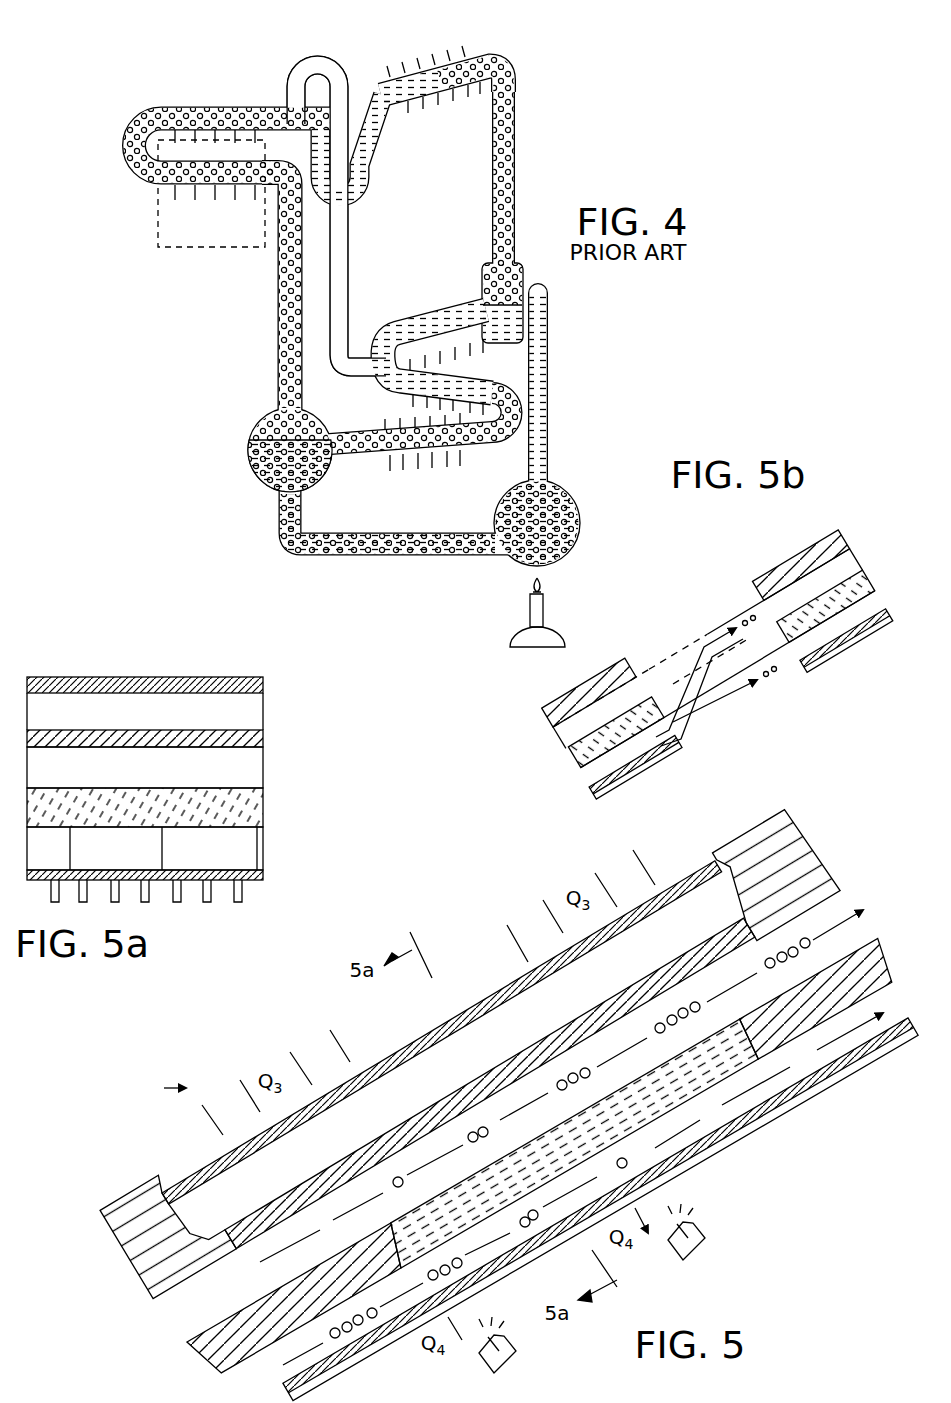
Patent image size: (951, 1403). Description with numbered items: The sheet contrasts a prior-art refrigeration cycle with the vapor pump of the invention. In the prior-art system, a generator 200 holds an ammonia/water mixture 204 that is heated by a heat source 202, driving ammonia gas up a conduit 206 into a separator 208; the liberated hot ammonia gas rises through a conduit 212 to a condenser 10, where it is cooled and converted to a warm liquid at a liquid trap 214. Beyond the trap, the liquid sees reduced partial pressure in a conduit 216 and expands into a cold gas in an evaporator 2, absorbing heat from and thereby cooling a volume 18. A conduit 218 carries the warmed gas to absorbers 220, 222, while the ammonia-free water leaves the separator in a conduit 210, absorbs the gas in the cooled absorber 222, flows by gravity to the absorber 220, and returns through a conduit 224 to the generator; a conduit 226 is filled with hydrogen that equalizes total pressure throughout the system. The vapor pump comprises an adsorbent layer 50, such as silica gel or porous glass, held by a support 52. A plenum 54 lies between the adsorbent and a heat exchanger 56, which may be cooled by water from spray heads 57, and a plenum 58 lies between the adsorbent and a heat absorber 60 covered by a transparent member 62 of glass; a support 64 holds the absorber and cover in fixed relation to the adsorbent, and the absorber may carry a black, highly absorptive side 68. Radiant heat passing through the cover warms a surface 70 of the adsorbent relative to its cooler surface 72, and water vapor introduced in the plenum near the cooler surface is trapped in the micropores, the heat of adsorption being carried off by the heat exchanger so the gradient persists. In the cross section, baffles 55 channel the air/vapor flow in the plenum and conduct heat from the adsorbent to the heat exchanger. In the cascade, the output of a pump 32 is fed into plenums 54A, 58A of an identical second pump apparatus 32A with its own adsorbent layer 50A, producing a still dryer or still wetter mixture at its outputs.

In FIG. 4, the condenser 10 is at (420, 60).
In FIG. 4, the conduit 216 is at (218, 107).
In FIG. 4, the liquid trap 214 is at (375, 172).
In FIG. 4, the conduit 212 is at (517, 172).
In FIG. 4, the conduit 226 is at (352, 238).
In FIG. 4, the volume 18 is at (158, 241).
In FIG. 4, the evaporator 2 is at (192, 198).
In FIG. 4, the separator 208 is at (482, 270).
In FIG. 4, the conduit 218 is at (277, 309).
In FIG. 4, the conduit 210 is at (408, 341).
In FIG. 4, the absorber 220 is at (252, 413).
In FIG. 4, the absorber 222 is at (398, 418).
In FIG. 4, the conduit 206 is at (549, 424).
In FIG. 4, the generator 200 is at (500, 498).
In FIG. 4, the ammonia/water mixture 204 is at (497, 528).
In FIG. 4, the conduit 224 is at (362, 555).
In FIG. 4, the heat source 202 is at (525, 614).
In FIG. 5a, the transparent member 62 is at (262, 688).
In FIG. 5, the transparent member 62 is at (693, 882).
In FIG. 5a, the heat absorber 60 is at (262, 739).
In FIG. 5, the heat absorber 60 is at (578, 1030).
In FIG. 5a, the plenum 58 is at (262, 768).
In FIG. 5b, the plenum 58 is at (572, 733).
In FIG. 5, the plenum 58 is at (358, 1182).
In FIG. 5a, the adsorbent layer 50 is at (262, 801).
In FIG. 5b, the adsorbent layer 50 is at (575, 760).
In FIG. 5, the adsorbent layer 50 is at (630, 1088).
In FIG. 5a, the plenum 54 is at (258, 853).
In FIG. 5b, the plenum 54 is at (595, 781).
In FIG. 5, the plenum 54 is at (710, 1128).
In FIG. 5a, the baffles 55 is at (160, 852).
In FIG. 5a, the heat exchanger 56 is at (250, 890).
In FIG. 5, the heat exchanger 56 is at (818, 1093).
In FIG. 5b, the pump 32 is at (607, 662).
In FIG. 5, the pump 32 is at (160, 1087).
In FIG. 5b, the second pump apparatus 32A is at (803, 542).
In FIG. 5b, the plenum 58A is at (850, 572).
In FIG. 5b, the adsorbent layer 50A is at (867, 597).
In FIG. 5b, the plenum 54A is at (870, 610).
In FIG. 5, the support 64 is at (127, 1196).
In FIG. 5, the side 68 is at (508, 1075).
In FIG. 5, the surface 70 is at (480, 1163).
In FIG. 5, the surface 72 is at (633, 1133).
In FIG. 5, the support 52 is at (245, 1311).
In FIG. 5, the spray heads 57 is at (712, 1240).